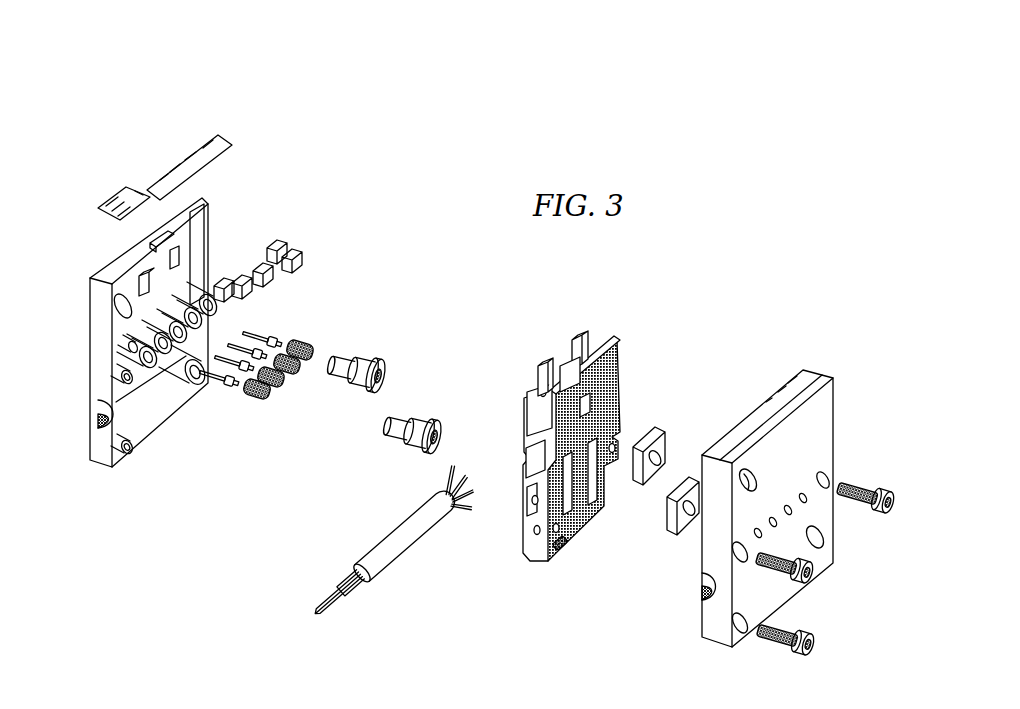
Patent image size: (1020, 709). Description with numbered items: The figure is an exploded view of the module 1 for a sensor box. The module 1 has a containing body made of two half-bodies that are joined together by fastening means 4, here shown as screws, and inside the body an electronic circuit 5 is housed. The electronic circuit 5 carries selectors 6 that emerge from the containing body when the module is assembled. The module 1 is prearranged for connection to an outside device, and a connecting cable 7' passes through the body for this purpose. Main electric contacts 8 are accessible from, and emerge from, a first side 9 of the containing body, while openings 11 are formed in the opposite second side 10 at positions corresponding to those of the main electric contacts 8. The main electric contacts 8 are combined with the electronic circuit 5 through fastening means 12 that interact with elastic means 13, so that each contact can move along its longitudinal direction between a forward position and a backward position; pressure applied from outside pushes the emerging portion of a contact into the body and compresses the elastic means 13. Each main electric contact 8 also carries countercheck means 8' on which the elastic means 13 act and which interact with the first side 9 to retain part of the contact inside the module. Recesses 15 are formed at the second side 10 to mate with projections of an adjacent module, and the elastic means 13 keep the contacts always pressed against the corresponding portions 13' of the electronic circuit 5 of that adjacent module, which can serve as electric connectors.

The module 1 is at (333, 124).
The fastening means 4 is at (875, 483).
The electronic circuit 5 is at (612, 338).
The selectors 6 is at (545, 367).
The connecting cable 7' is at (393, 550).
The main electric contacts 8 is at (262, 324).
The countercheck means 8' is at (219, 411).
The first side 9 is at (90, 356).
The second side 10 is at (822, 428).
The openings 11 is at (807, 498).
The fastening means 12 is at (343, 384).
The elastic means 13 is at (314, 349).
The portions of the electronic circuit 13' is at (572, 571).
The recesses 15 is at (745, 486).